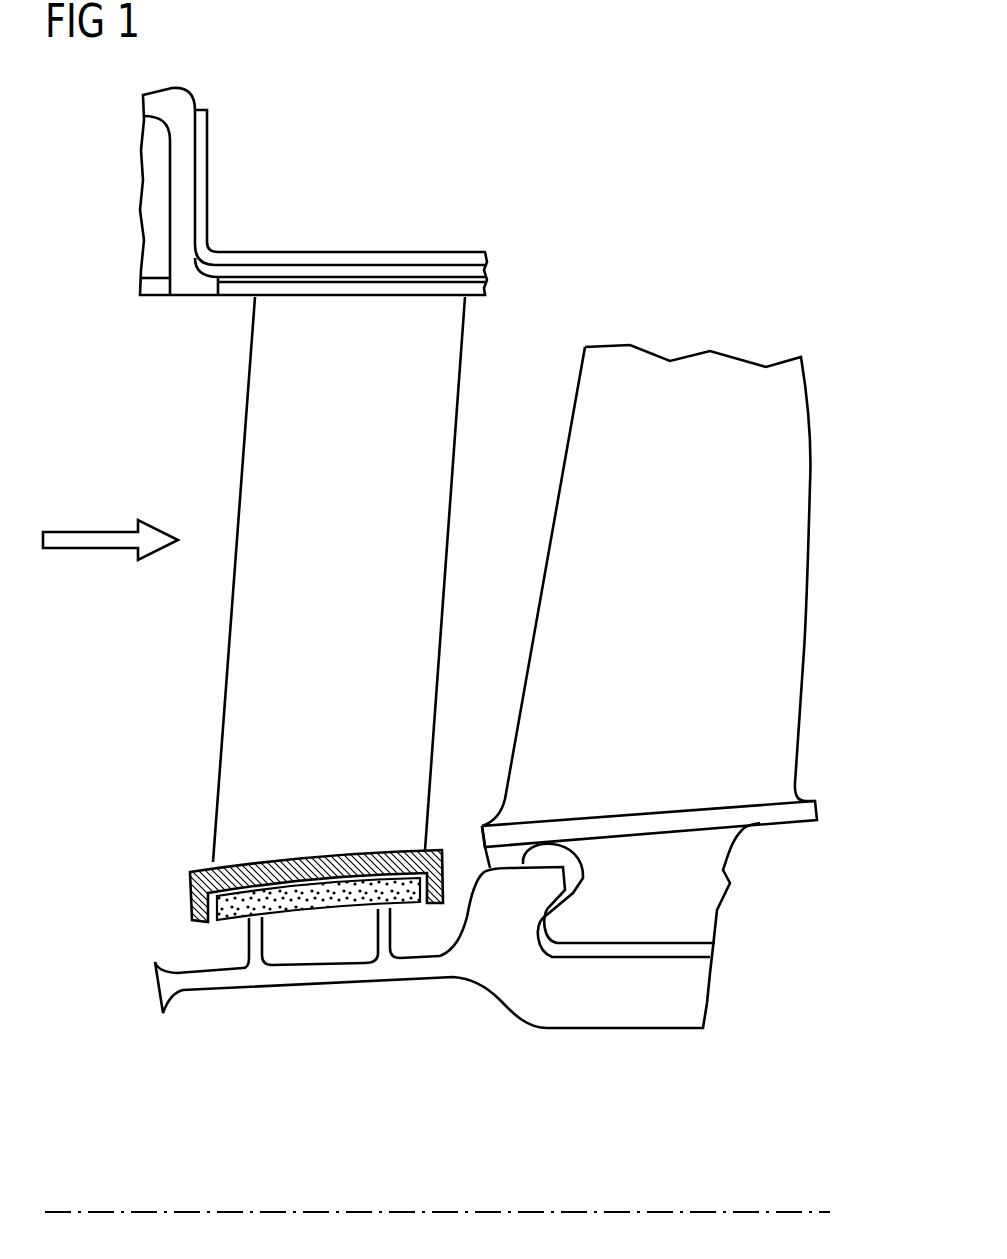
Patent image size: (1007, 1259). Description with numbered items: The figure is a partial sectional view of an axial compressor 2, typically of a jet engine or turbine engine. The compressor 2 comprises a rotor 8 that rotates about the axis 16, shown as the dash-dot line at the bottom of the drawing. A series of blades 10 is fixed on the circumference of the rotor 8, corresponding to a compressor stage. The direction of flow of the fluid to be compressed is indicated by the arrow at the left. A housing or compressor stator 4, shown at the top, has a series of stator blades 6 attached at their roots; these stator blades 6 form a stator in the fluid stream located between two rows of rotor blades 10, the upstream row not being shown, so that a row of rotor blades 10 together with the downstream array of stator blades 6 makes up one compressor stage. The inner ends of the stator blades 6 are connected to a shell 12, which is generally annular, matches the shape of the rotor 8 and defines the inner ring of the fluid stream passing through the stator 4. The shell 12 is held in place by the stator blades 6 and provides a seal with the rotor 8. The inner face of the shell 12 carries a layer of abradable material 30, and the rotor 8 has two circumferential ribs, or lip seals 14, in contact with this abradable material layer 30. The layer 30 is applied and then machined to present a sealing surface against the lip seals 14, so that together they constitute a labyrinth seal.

The axial compressor 2 is at (481, 153).
The compressor stator 4 is at (258, 262).
The stator blades 6 is at (265, 397).
The rotor 8 is at (693, 997).
The rotor blades 10 is at (783, 682).
The shell 12 is at (188, 880).
The lip seals 14 is at (380, 935).
The axis 16 is at (757, 1212).
The abradable material layer 30 is at (227, 915).